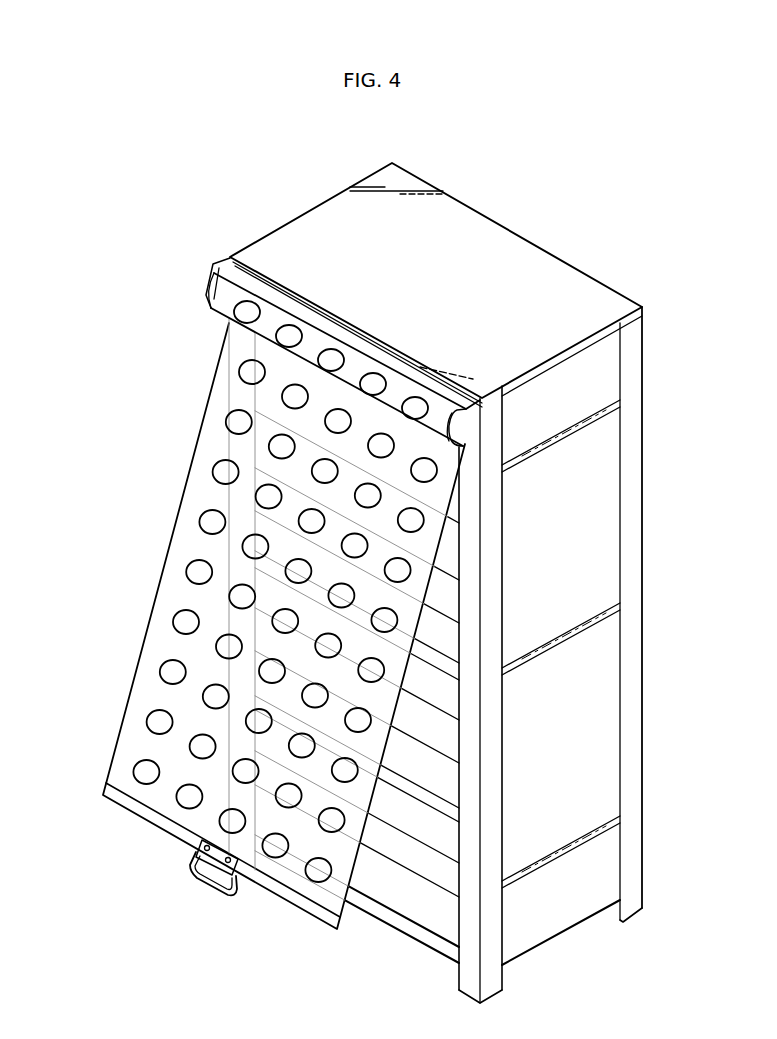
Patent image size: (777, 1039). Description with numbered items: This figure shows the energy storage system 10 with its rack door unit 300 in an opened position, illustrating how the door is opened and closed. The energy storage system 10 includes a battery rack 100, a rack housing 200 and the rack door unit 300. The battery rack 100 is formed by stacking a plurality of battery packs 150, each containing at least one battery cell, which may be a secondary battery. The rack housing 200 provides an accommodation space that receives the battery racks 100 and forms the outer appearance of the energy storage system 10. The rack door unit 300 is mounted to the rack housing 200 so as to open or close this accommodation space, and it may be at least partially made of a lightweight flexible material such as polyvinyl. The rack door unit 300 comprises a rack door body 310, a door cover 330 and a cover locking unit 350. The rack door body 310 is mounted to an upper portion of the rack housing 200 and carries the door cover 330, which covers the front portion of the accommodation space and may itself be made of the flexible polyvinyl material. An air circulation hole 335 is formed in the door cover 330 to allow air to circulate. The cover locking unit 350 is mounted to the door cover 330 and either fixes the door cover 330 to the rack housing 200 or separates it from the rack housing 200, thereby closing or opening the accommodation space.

The energy storage system 10 is at (232, 191).
The battery rack 100 is at (460, 744).
The battery pack 150 is at (441, 692).
The rack housing 200 is at (643, 516).
The rack door unit 300 is at (120, 558).
The rack door body 310 is at (201, 284).
The door cover 330 is at (163, 643).
The air circulation hole 335 is at (196, 512).
The cover locking unit 350 is at (94, 782).